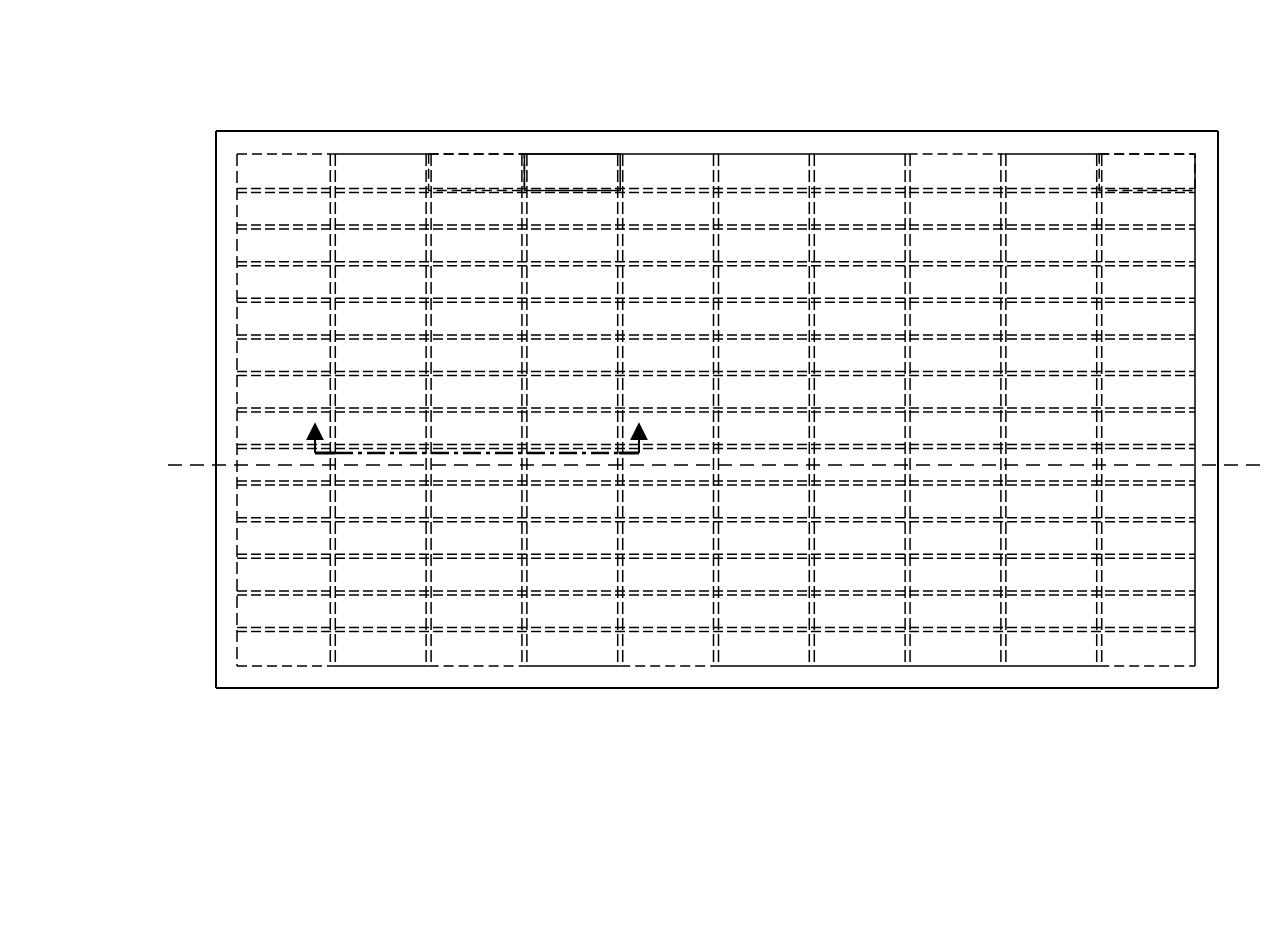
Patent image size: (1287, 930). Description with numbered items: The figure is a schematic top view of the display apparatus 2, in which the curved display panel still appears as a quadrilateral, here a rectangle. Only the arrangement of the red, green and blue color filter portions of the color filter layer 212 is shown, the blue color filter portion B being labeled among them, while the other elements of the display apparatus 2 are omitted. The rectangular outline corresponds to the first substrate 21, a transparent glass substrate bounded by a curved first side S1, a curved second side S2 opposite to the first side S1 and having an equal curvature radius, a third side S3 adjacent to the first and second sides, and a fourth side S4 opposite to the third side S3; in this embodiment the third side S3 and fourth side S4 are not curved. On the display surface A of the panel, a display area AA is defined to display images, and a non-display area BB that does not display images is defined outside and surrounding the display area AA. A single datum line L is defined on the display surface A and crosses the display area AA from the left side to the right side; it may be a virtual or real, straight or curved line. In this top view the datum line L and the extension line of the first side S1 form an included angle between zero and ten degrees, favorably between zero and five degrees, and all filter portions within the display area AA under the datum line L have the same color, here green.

The display apparatus 2 is at (275, 98).
The first substrate 21 is at (731, 140).
The color filter layer 212 is at (985, 175).
The display surface A is at (1178, 170).
The display area AA is at (486, 152).
The non-display area BB is at (575, 142).
The first side S1 is at (1154, 689).
The second side S2 is at (845, 132).
The third side S3 is at (215, 338).
The fourth side S4 is at (1219, 598).
The datum line L is at (726, 465).
The blue color filter portion B is at (477, 423).